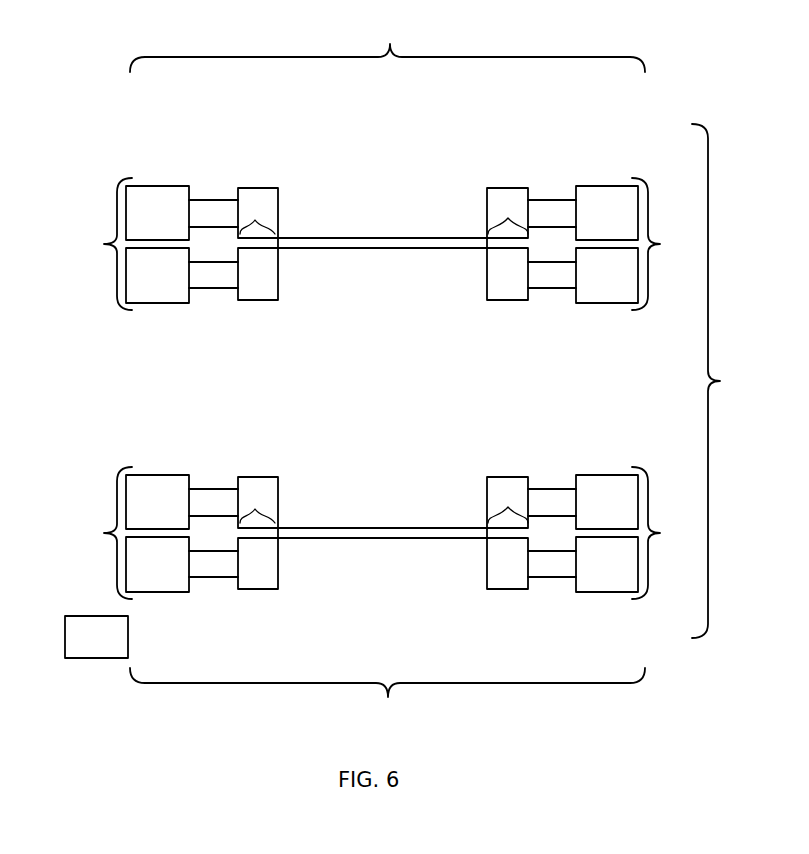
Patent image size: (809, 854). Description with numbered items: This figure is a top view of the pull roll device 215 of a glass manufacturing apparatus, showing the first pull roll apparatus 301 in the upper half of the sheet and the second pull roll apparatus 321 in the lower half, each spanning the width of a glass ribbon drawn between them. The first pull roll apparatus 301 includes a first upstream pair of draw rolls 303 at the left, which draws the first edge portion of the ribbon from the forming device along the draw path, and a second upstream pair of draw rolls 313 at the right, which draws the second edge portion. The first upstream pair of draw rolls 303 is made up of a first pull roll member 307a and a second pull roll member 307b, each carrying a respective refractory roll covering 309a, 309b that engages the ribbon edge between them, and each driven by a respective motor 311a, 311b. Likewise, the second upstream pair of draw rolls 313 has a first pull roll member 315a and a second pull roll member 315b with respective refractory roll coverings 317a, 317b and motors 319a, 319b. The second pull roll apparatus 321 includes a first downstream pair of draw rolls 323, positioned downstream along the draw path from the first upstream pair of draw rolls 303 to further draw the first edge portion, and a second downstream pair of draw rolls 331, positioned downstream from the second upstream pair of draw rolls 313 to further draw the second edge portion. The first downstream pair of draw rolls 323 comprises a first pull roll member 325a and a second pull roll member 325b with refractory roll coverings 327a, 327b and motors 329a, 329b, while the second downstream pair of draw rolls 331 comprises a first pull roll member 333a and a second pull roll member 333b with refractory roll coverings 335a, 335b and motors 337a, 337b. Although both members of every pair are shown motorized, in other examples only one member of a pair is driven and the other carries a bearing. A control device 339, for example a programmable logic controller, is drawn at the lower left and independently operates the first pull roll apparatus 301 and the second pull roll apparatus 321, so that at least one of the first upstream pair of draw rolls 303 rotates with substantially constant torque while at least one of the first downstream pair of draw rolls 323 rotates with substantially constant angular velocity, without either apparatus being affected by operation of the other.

The pull roll device 215 is at (728, 381).
The first pull roll apparatus 301 is at (387, 43).
The second pull roll apparatus 321 is at (387, 695).
The first upstream pair of draw rolls 303 is at (92, 244).
The second upstream pair of draw rolls 313 is at (668, 244).
The first downstream pair of draw rolls 323 is at (92, 533).
The second downstream pair of draw rolls 331 is at (668, 533).
The first pull roll member 307a is at (214, 306).
The second pull roll member 307b is at (201, 164).
The refractory roll covering 309a is at (263, 300).
The refractory roll covering 309b is at (245, 188).
The motor 311a is at (160, 303).
The motor 311b is at (160, 186).
The first pull roll member 315a is at (551, 306).
The second pull roll member 315b is at (566, 159).
The refractory roll covering 317a is at (508, 300).
The refractory roll covering 317b is at (520, 188).
The motor 319a is at (606, 303).
The motor 319b is at (612, 186).
The first pull roll member 325a is at (210, 595).
The second pull roll member 325b is at (200, 467).
The refractory roll covering 327a is at (263, 589).
The refractory roll covering 327b is at (245, 477).
The motor 329a is at (160, 592).
The motor 329b is at (160, 475).
The first pull roll member 333a is at (554, 596).
The second pull roll member 333b is at (569, 464).
The refractory roll covering 335a is at (508, 589).
The refractory roll covering 335b is at (520, 477).
The motor 337a is at (606, 592).
The motor 337b is at (612, 475).
The control device 339 is at (100, 658).